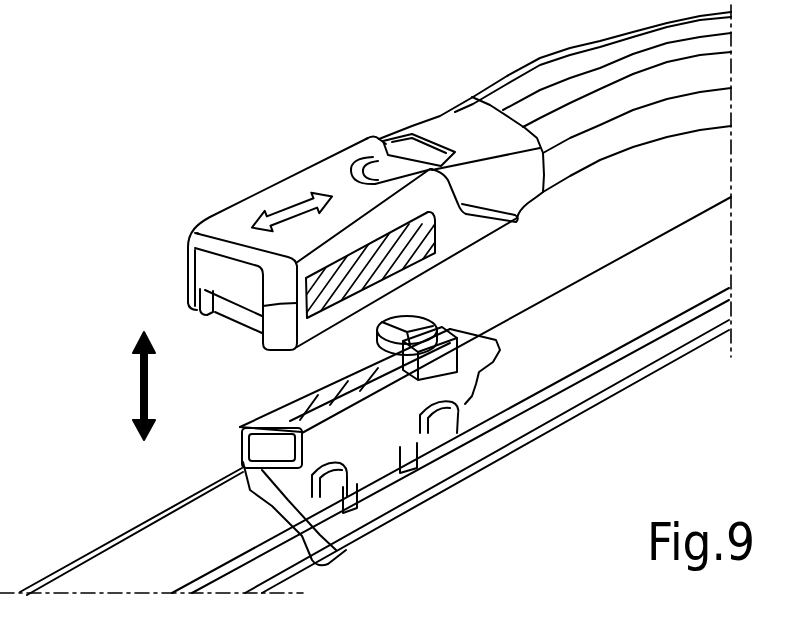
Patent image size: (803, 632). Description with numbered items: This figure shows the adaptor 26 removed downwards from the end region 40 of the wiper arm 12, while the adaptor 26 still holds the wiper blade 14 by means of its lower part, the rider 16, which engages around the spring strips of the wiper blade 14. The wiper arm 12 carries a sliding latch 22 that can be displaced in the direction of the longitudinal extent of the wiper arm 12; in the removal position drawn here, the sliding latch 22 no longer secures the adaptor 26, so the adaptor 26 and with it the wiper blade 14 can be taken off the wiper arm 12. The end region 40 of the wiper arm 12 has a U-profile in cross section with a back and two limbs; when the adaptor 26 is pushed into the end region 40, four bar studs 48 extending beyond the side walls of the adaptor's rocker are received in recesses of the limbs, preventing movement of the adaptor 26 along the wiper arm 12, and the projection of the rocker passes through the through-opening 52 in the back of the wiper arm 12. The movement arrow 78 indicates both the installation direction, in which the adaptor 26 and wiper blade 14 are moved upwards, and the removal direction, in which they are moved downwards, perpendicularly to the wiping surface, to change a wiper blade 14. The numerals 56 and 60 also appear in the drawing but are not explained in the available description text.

The wiper arm 12 is at (568, 40).
The wiper blade 14 is at (113, 513).
The rider 16 is at (400, 497).
The sliding latch 22 is at (190, 203).
The adaptor 26 is at (255, 400).
The end region 40 is at (373, 117).
The bar studs 48 is at (322, 69).
The through-opening 52 is at (390, 140).
The housing end wall 56 is at (149, 125).
The cover plate 60 is at (213, 117).
The movement arrow 78 is at (138, 382).